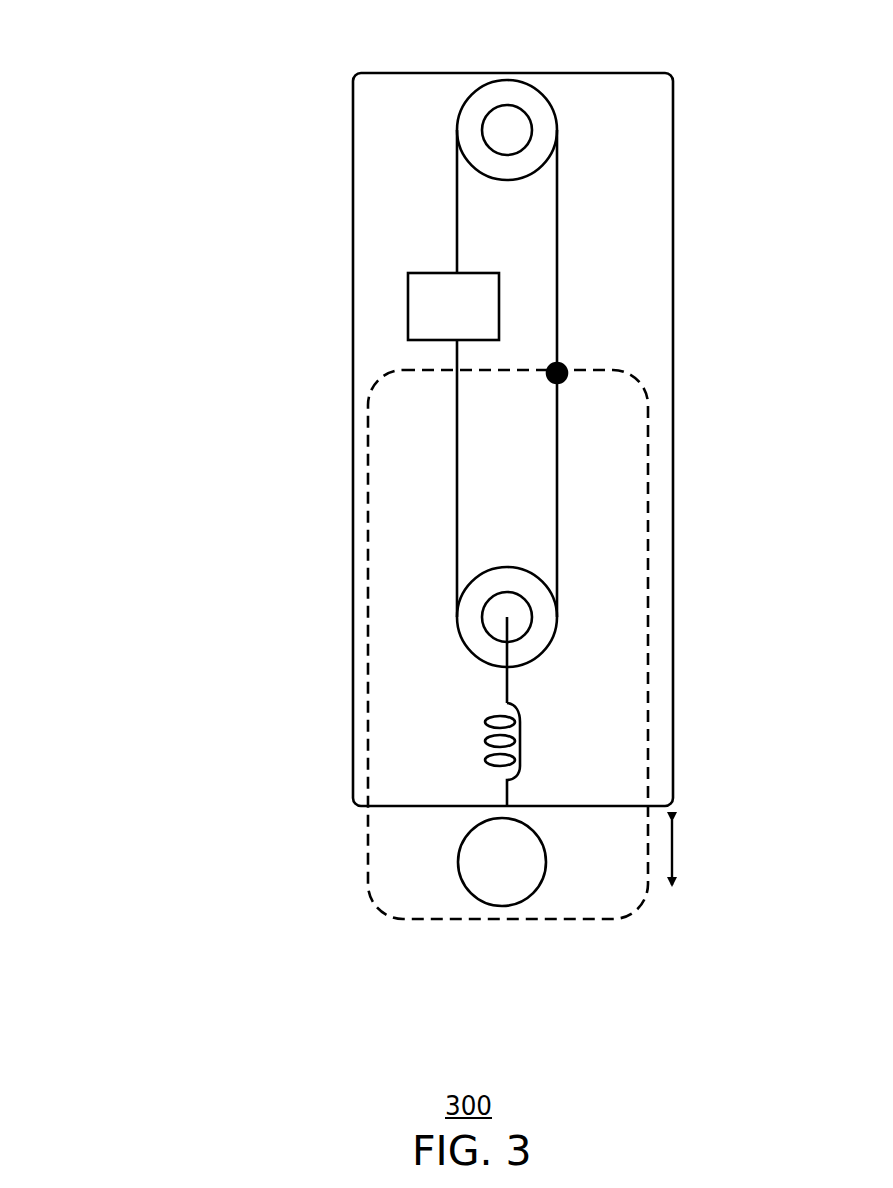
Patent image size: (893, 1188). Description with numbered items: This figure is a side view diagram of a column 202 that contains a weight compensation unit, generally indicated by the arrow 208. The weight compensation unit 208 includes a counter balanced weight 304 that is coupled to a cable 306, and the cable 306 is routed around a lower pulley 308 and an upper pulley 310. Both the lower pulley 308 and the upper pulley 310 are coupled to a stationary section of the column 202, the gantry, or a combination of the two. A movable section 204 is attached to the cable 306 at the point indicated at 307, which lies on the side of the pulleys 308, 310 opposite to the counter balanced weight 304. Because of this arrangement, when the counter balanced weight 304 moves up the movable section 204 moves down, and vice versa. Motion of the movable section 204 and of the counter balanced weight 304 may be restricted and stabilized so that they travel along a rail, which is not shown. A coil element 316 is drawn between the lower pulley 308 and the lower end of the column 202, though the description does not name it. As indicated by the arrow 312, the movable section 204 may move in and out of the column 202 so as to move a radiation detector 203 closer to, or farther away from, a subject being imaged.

The column 202 is at (352, 123).
The radiation detector 203 is at (472, 885).
The movable section 204 is at (368, 845).
The weight compensation unit 208 is at (193, 264).
The counter balanced weight 304 is at (408, 290).
The cable 306 is at (557, 255).
The attachment point 307 is at (560, 370).
The lower pulley 308 is at (532, 627).
The upper pulley 310 is at (525, 110).
The arrow indicating movement 312 is at (672, 852).
The spring 316 is at (497, 735).